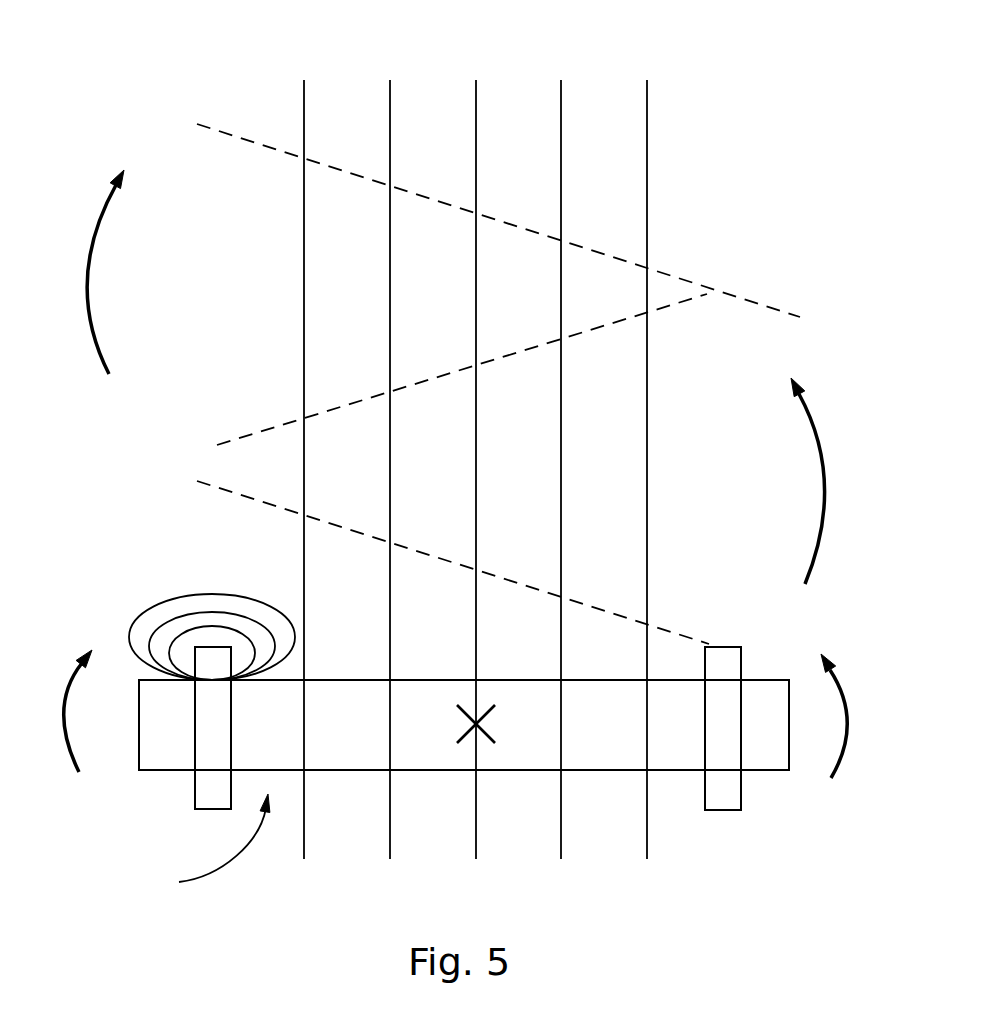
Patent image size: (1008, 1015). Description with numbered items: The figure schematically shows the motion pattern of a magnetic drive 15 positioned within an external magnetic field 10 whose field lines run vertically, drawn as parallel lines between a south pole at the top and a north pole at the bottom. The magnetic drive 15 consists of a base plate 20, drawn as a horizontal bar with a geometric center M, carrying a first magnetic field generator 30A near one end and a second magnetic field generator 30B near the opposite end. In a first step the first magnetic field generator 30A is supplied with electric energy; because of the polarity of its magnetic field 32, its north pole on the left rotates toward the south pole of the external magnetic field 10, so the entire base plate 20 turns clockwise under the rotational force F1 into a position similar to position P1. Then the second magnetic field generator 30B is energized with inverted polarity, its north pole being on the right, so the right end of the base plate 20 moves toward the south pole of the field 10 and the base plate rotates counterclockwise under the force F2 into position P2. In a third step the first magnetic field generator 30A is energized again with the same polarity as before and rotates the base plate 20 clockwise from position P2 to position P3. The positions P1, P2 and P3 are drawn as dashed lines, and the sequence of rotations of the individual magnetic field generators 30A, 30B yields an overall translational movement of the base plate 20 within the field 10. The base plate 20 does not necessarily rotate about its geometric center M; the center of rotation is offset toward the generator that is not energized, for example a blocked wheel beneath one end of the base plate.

The external magnetic field 10 is at (645, 135).
The magnetic drive 15 is at (207, 845).
The base plate 20 is at (758, 688).
The first magnetic field generator 30A is at (207, 657).
The second magnetic field generator 30B is at (723, 649).
The magnetic field of the first magnetic field generator 32 is at (215, 591).
The geometric center M is at (480, 722).
The first position P1 is at (230, 490).
The second position P2 is at (238, 437).
The third position P3 is at (688, 277).
The clockwise rotational force F1 is at (22, 846).
The counterclockwise rotational force F2 is at (905, 833).